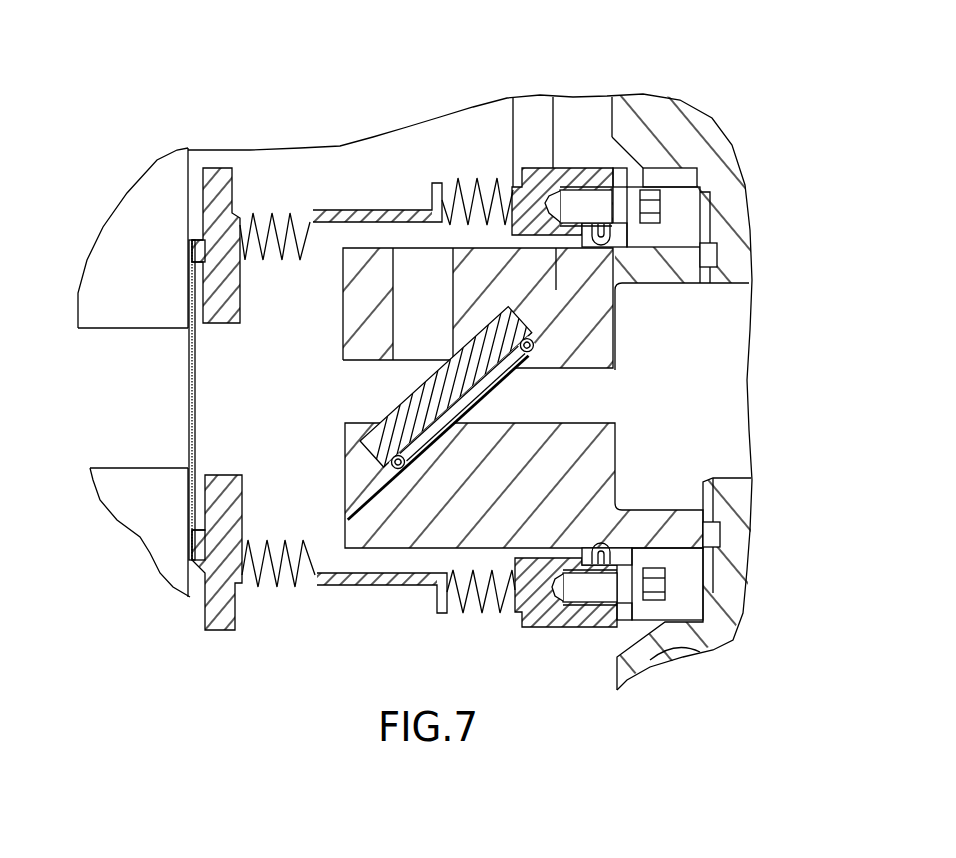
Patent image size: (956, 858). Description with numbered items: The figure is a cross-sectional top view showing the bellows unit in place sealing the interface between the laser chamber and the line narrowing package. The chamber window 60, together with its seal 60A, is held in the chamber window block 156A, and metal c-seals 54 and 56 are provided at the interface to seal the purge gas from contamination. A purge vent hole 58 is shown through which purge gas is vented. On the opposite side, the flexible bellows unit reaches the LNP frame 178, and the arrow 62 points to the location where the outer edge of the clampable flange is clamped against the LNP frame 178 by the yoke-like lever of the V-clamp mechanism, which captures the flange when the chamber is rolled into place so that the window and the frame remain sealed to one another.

The LNP frame 178 is at (157, 200).
The arrow 62 is at (244, 180).
The purge vent hole 58 is at (408, 267).
The chamber window 60 is at (534, 335).
The seal 60A is at (616, 308).
The metal c-seal 54 is at (625, 543).
The metal c-seal 56 is at (180, 563).
The chamber window block 156A is at (383, 548).